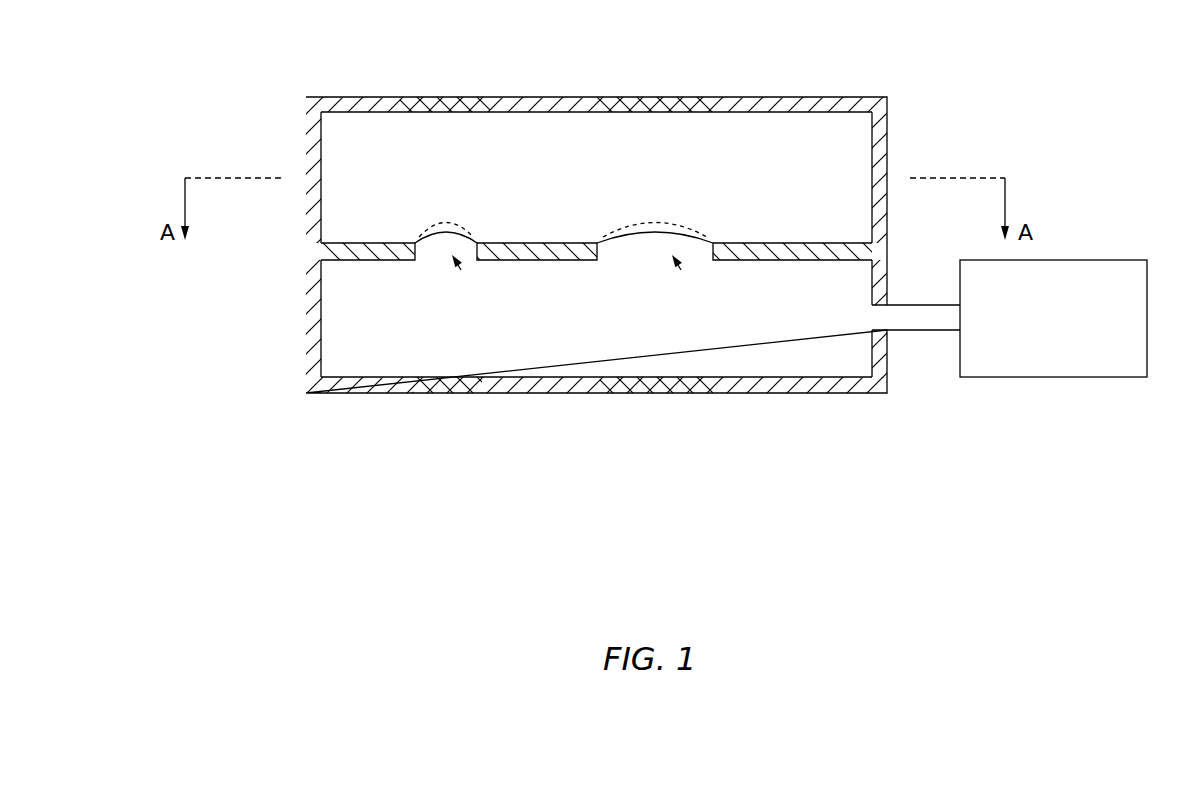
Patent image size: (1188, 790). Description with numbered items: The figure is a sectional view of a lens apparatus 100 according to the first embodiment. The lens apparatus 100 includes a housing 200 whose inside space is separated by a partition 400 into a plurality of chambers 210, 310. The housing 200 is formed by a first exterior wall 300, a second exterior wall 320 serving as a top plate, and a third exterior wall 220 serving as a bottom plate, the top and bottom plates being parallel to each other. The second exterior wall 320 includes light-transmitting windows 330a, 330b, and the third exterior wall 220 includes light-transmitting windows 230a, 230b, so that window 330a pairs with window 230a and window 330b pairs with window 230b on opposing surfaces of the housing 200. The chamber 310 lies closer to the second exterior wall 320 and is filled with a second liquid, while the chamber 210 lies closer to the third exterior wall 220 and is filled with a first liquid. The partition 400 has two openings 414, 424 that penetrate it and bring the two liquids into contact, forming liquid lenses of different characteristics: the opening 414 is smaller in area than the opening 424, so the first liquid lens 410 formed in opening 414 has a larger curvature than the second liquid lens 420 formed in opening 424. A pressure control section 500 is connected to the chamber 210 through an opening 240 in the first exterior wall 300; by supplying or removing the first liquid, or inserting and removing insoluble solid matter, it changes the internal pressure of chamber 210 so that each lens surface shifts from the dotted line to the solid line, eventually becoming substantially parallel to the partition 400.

The lens apparatus 100 is at (675, 553).
The housing 200 is at (306, 316).
The chamber 210 is at (615, 352).
The third exterior wall 220 is at (352, 393).
The window 230a is at (447, 393).
The window 230b is at (662, 393).
The opening 240 is at (877, 318).
The first exterior wall 300 is at (306, 136).
The chamber 310 is at (615, 165).
The second exterior wall 320 is at (353, 97).
The window 330a is at (455, 97).
The window 330b is at (652, 97).
The partition 400 is at (370, 260).
The first liquid lens 410 is at (452, 226).
The opening 414 is at (460, 268).
The second liquid lens 420 is at (687, 230).
The opening 424 is at (680, 268).
The pressure control section 500 is at (1053, 377).